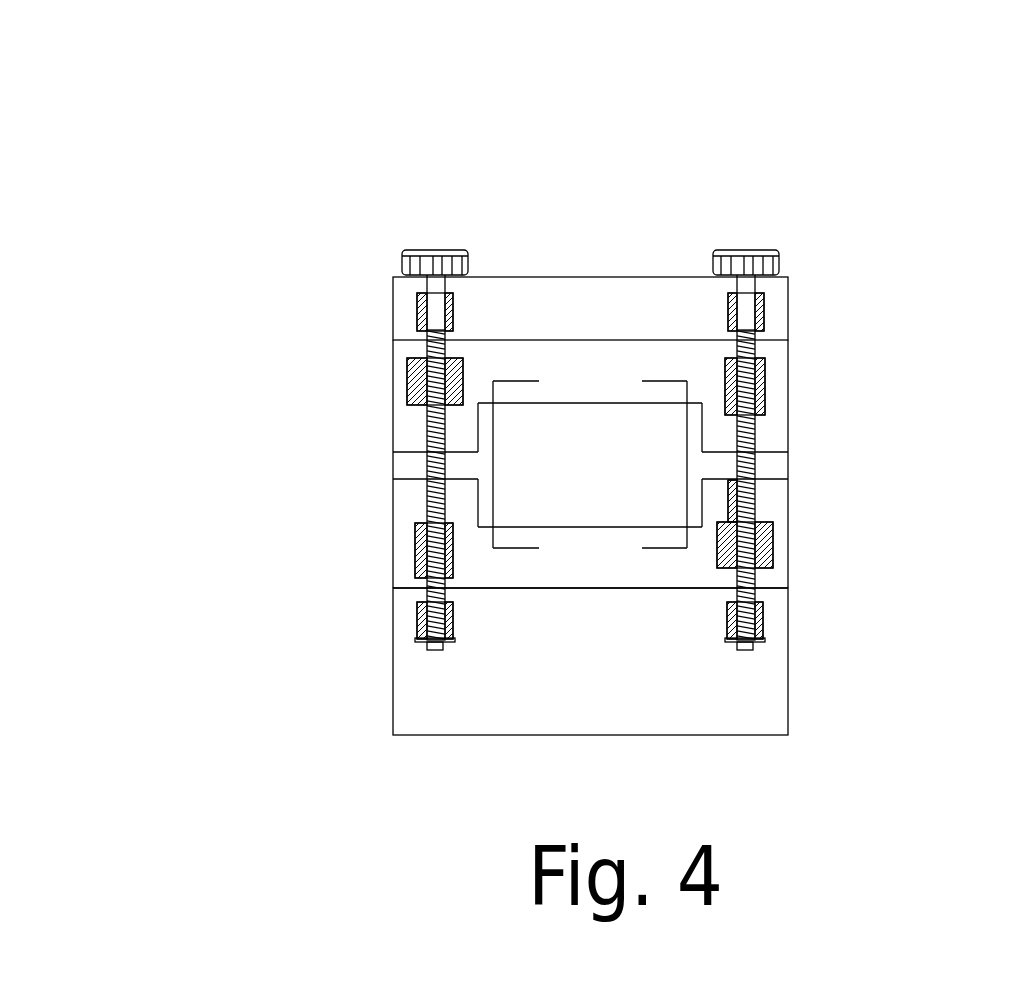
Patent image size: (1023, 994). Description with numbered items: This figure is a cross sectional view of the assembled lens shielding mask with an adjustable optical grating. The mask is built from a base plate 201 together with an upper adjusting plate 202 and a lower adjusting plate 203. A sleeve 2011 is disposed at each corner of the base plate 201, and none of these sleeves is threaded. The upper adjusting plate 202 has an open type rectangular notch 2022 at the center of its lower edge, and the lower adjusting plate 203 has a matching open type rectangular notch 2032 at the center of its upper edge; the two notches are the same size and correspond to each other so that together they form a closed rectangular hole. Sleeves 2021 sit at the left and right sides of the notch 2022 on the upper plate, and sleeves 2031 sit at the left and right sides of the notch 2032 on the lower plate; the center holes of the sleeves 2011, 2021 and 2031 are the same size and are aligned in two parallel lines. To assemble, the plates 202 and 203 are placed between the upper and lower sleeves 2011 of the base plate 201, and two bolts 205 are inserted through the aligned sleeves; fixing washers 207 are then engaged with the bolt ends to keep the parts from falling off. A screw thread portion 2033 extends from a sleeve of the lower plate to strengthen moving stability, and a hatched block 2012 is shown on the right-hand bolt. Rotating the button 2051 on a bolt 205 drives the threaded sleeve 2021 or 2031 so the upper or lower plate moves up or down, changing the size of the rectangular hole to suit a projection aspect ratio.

The base plate 201 is at (636, 303).
The upper adjusting plate 202 is at (613, 355).
The lower adjusting plate 203 is at (640, 575).
The sleeve 2011 is at (452, 312).
The right sliding block 2012 is at (765, 358).
The sleeve 2021 is at (410, 378).
The open type rectangular notch 2022 is at (556, 415).
The sleeve 2031 is at (415, 545).
The open type rectangular notch 2032 is at (772, 540).
The screw thread portion 2033 is at (752, 493).
The bolt 205 is at (424, 445).
The knob 2051 is at (426, 250).
The fixing washer 207 is at (425, 645).